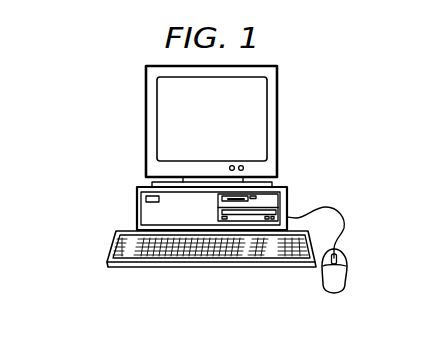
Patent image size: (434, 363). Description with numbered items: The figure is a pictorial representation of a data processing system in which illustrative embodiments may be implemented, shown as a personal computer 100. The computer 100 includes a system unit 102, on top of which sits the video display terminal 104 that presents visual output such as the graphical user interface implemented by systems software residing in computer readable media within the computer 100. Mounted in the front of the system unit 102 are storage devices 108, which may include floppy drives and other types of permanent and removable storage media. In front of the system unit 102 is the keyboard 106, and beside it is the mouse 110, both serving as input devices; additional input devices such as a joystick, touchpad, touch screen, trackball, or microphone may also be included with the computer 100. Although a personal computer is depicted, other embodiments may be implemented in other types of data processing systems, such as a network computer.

The computer 100 is at (93, 117).
The system unit 102 is at (137, 200).
The video display terminal 104 is at (277, 122).
The keyboard 106 is at (132, 268).
The storage devices 108 is at (257, 197).
The mouse 110 is at (334, 293).